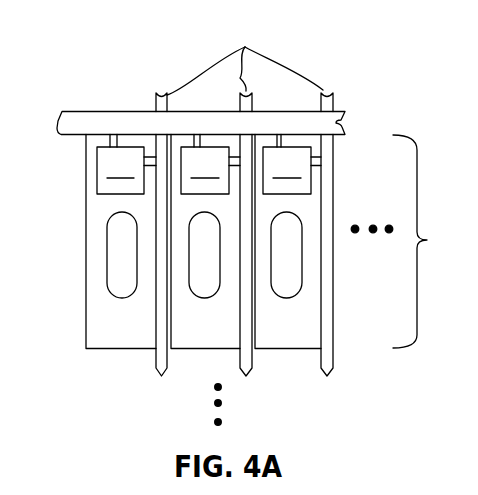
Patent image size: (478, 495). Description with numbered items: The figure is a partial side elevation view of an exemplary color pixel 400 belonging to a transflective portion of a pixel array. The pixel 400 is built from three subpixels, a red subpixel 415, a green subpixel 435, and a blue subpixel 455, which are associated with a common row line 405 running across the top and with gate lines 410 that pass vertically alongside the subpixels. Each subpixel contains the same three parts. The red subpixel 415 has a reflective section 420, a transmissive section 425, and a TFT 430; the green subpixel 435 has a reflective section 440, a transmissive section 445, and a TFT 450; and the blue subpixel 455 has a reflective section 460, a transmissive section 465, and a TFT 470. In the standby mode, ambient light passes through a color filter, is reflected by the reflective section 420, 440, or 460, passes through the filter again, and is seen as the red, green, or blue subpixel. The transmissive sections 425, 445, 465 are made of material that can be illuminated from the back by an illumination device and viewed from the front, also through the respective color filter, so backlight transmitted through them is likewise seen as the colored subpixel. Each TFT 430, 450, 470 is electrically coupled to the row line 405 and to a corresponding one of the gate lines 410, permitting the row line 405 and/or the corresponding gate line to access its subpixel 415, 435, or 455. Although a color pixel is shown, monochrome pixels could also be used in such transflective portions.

The pixel 400 is at (429, 241).
The row line 405 is at (342, 125).
The gate lines 410 is at (244, 68).
The red subpixel 415 is at (123, 349).
The reflective section 420 is at (105, 303).
The transmissive section 425 is at (122, 276).
The TFT 430 is at (126, 165).
The green subpixel 435 is at (188, 349).
The reflective section 440 is at (217, 337).
The transmissive section 445 is at (203, 218).
The TFT 450 is at (210, 165).
The blue subpixel 455 is at (288, 349).
The reflective section 460 is at (312, 303).
The transmissive section 465 is at (292, 276).
The TFT 470 is at (292, 165).